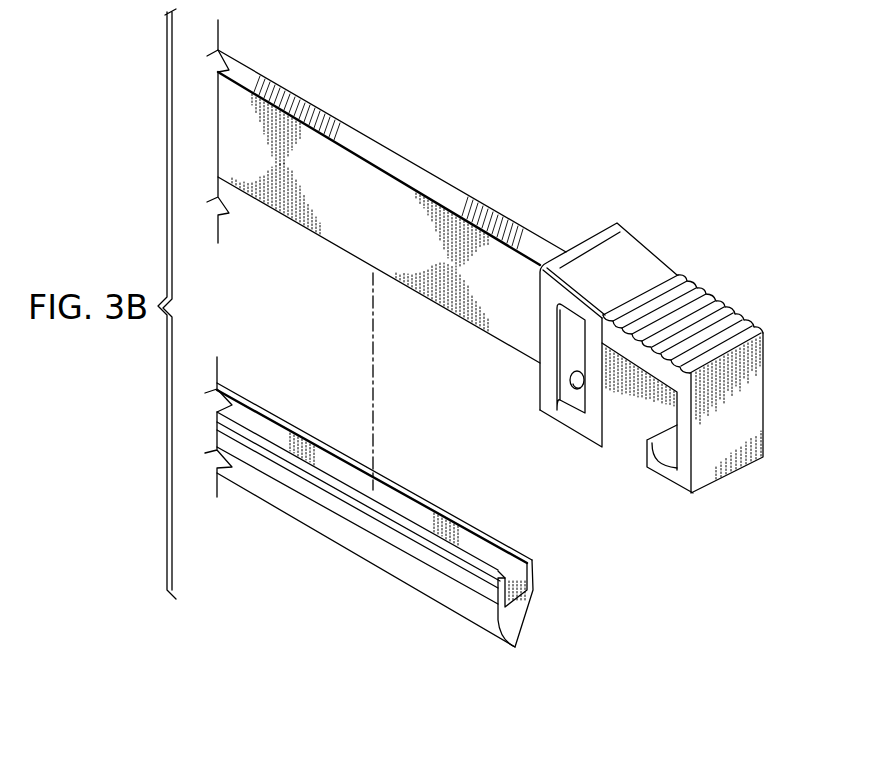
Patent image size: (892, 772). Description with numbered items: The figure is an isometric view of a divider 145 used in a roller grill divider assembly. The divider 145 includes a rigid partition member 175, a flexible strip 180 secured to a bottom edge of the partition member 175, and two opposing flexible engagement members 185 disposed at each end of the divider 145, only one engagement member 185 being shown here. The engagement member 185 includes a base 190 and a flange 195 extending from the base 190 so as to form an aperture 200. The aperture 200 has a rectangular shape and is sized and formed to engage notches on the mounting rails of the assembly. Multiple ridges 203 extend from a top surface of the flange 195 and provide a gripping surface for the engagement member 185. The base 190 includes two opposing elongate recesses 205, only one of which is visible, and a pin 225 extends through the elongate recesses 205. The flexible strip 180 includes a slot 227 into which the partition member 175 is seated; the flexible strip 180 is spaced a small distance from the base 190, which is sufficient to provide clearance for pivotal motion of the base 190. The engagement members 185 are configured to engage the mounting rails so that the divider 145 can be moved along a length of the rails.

The divider 145 is at (638, 159).
The partition member 175 is at (397, 149).
The flexible strip 180 is at (338, 546).
The engagement member 185 is at (636, 356).
The base 190 is at (592, 443).
The flange 195 is at (764, 400).
The aperture 200 is at (630, 452).
The ridges 203 is at (719, 294).
The elongate recess 205 is at (558, 318).
The pin 225 is at (568, 375).
The slot 227 is at (533, 588).